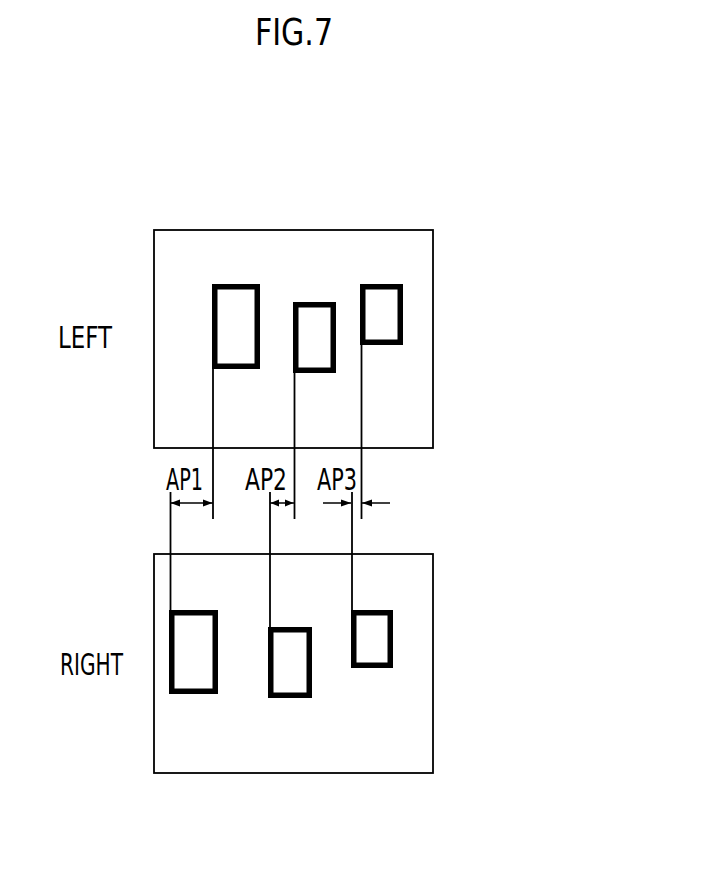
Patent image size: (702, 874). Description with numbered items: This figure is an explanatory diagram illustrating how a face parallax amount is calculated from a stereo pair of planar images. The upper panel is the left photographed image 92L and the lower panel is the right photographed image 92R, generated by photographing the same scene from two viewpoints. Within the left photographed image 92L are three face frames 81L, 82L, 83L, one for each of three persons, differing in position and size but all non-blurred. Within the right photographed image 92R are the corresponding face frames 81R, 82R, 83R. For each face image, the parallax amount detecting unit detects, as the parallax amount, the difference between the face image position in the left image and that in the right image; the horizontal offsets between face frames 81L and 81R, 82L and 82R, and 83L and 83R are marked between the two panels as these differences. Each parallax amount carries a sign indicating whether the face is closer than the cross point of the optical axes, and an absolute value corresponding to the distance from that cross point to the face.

The left photographed image 92L is at (433, 349).
The right photographed image 92R is at (433, 659).
The face frame 81L is at (238, 285).
The face frame 82L is at (320, 302).
The face frame 83L is at (388, 285).
The face frame 81R is at (190, 695).
The face frame 82R is at (287, 698).
The face frame 83R is at (370, 668).